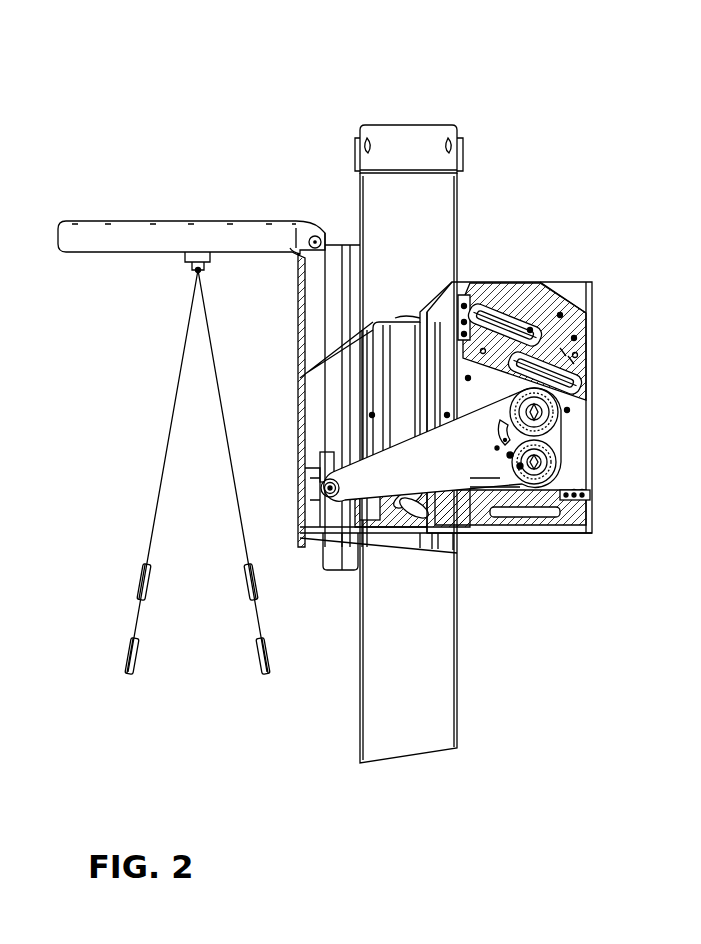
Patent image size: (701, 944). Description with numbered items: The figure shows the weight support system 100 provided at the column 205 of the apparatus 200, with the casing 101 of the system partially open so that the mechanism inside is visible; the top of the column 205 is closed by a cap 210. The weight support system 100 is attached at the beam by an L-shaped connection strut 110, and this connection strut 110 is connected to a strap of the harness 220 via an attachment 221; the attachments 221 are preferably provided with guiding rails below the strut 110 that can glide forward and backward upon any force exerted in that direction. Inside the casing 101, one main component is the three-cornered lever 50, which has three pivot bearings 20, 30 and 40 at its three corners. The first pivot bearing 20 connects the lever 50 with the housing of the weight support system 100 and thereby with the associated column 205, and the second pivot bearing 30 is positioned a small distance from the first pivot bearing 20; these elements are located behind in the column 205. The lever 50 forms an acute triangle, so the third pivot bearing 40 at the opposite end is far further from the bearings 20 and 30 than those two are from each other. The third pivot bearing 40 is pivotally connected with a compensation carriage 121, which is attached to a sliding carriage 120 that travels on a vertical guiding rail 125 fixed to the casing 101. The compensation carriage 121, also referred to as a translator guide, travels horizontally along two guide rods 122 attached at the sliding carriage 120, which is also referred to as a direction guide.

The weight support system 100 is at (459, 406).
The casing 101 is at (592, 298).
The L-shaped connection strut 110 is at (88, 196).
The sliding carriage 120 is at (317, 402).
The compensation carriage 121 is at (330, 458).
The guide rods 122 is at (318, 470).
The vertical guiding rail 125 is at (313, 376).
The first pivot bearing 20 is at (590, 432).
The second pivot bearing 30 is at (560, 457).
The third pivot bearing 40 is at (304, 540).
The three-cornered lever 50 is at (455, 460).
The apparatus 200 is at (466, 393).
The column 205 is at (445, 197).
The cap 210 is at (428, 138).
The harness 220 is at (165, 450).
The attachment 221 is at (173, 283).